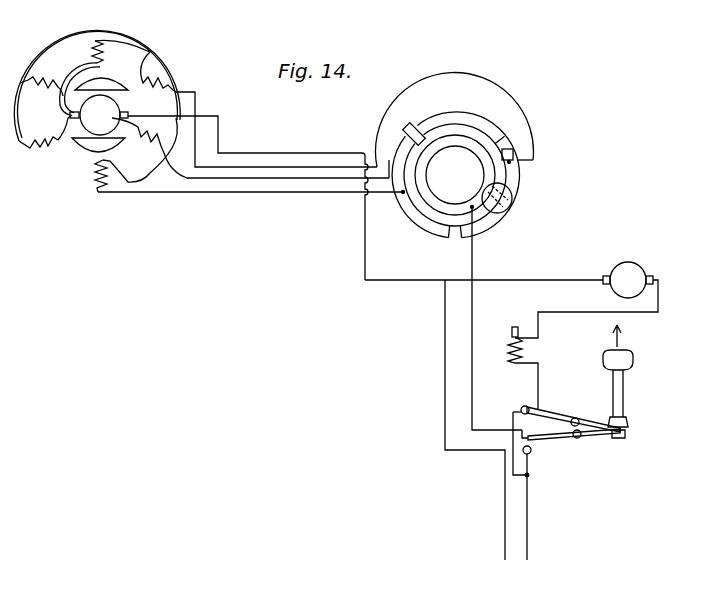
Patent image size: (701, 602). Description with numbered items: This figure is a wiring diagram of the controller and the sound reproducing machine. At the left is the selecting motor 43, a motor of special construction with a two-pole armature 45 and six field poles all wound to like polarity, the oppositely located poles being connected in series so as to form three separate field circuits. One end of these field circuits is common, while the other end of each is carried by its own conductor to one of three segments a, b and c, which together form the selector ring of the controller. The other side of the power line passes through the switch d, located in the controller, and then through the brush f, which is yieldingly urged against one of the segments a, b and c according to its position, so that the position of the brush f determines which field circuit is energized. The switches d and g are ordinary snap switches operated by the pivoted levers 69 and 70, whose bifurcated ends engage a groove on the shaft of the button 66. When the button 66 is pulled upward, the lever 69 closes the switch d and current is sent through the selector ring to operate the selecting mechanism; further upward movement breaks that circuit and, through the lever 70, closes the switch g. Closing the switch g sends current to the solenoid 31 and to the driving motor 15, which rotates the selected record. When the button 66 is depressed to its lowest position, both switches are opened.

The selecting motor 43 is at (180, 48).
The armature 45 is at (90, 146).
The driving motor 15 is at (628, 262).
The solenoid 31 is at (532, 346).
The button 66 is at (624, 386).
The pivoted lever 69 is at (560, 417).
The pivoted lever 70 is at (563, 434).
The segment a is at (211, 193).
The segment b is at (246, 181).
The segment c is at (290, 168).
The switch d is at (530, 407).
The brush f is at (505, 208).
The switch g is at (532, 454).